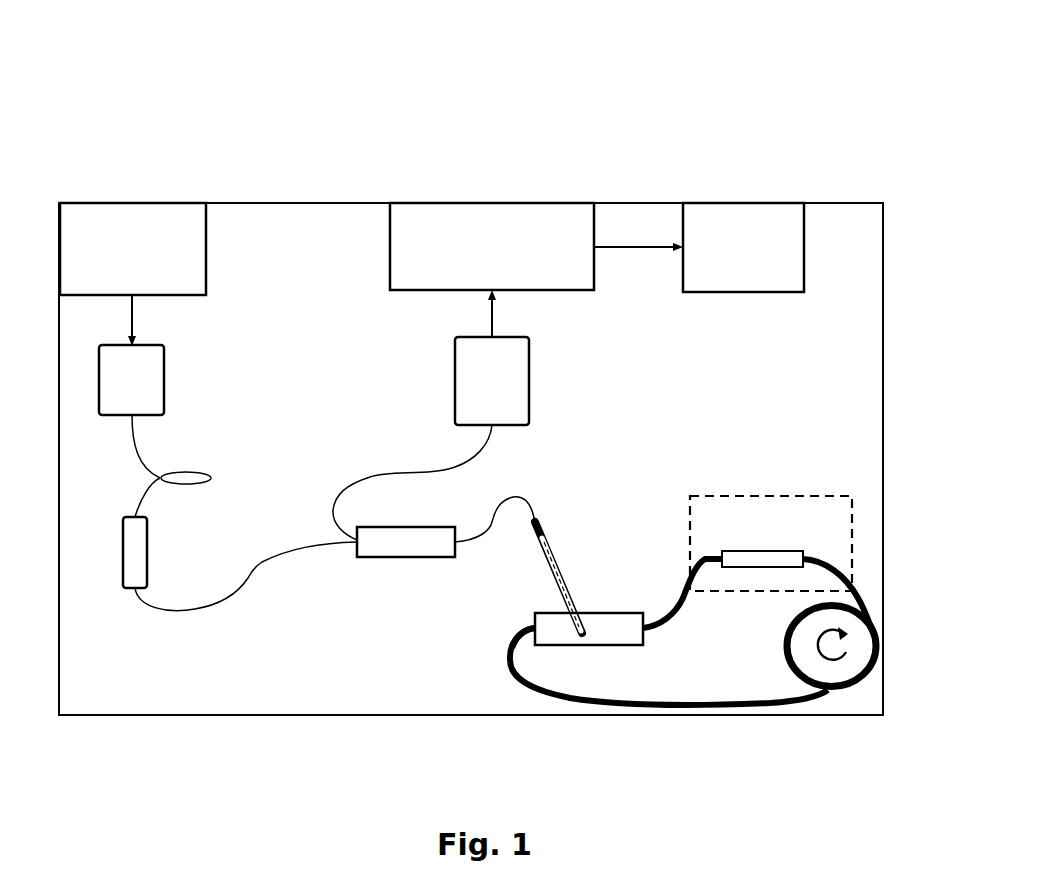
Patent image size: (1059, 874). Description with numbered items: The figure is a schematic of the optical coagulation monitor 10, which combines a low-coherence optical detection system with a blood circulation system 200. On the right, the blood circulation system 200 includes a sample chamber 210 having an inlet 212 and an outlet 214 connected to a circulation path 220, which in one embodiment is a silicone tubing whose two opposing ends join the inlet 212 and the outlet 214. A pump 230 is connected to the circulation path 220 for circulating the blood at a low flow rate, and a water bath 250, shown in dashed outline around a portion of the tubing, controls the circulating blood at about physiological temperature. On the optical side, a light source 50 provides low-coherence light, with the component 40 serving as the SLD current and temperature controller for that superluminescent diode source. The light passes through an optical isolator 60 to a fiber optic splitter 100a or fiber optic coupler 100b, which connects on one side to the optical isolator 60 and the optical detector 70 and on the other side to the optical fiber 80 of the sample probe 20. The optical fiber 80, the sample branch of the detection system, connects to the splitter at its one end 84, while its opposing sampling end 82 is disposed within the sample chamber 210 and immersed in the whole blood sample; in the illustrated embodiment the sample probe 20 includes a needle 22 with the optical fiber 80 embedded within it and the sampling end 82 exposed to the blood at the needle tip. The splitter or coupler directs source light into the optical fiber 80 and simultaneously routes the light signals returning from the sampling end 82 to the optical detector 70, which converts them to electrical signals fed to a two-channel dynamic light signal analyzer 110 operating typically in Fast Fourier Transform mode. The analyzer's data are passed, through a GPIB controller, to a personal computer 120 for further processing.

The surgical system 10 is at (500, 32).
The sample probe 20 is at (617, 609).
The needle 22 is at (617, 609).
The SLD current and temperature controller 40 is at (140, 233).
The light source 50 is at (137, 385).
The optical isolator 60 is at (138, 567).
The optical detector 70 is at (492, 395).
The optical fiber 80 is at (571, 609).
The sampling end 82 is at (582, 637).
The end 84 is at (457, 535).
The fiber optic splitter 100a is at (352, 579).
The fiber optic coupler 100b is at (395, 545).
The two-channel dynamic light signal analyzer 110 is at (483, 235).
The personal computer 120 is at (740, 237).
The blood circulation system 200 is at (674, 670).
The sample chamber 210 is at (605, 632).
The inlet 212 is at (645, 635).
The outlet 214 is at (527, 627).
The circulation path 220 is at (547, 695).
The pump 230 is at (858, 642).
The water bath 250 is at (747, 517).